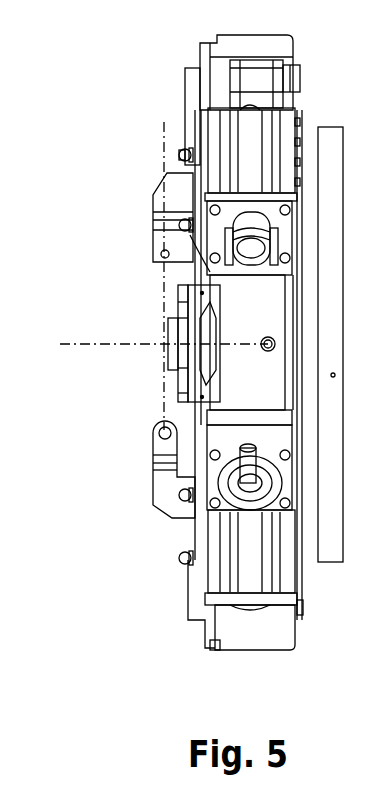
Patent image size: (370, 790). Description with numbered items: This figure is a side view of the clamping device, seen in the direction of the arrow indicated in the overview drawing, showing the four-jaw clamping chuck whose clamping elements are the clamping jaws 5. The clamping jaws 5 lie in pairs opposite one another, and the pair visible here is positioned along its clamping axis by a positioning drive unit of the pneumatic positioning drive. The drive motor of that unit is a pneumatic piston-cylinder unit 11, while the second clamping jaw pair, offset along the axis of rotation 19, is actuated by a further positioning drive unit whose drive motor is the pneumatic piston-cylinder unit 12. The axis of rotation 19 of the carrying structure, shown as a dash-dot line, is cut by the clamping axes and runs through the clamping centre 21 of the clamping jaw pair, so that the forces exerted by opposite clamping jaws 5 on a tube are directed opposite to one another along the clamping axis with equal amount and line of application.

The clamping jaws 5 is at (121, 345).
The pneumatic piston-cylinder unit 11 is at (203, 100).
The pneumatic piston-cylinder unit 12 is at (202, 588).
The axis of rotation 19 is at (100, 340).
The clamping centre 21 is at (165, 345).